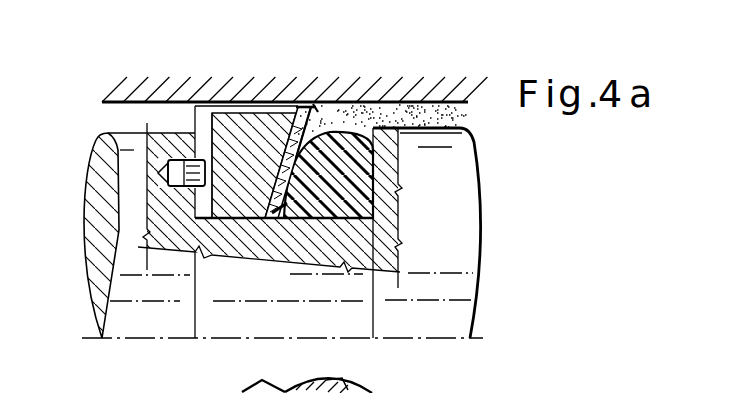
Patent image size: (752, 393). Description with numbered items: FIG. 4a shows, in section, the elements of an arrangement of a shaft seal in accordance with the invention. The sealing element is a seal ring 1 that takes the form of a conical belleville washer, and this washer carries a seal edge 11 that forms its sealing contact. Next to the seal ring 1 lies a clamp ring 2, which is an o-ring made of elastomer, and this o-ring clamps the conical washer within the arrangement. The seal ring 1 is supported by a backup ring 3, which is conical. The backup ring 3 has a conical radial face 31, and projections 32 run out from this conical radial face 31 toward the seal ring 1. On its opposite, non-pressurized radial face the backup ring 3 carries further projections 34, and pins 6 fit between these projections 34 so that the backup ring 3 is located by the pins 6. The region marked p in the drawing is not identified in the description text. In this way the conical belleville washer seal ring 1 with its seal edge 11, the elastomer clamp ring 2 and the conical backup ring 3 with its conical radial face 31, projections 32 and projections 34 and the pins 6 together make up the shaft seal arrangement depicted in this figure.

The seal ring 1 is at (312, 102).
The seal edge 11 is at (314, 102).
The clamp ring 2 is at (349, 158).
The backup ring 3 is at (234, 138).
The conical radial face 31 is at (289, 128).
The projections 32 is at (254, 212).
The projections 34 is at (202, 130).
The pins 6 is at (185, 172).
The packing material p is at (415, 118).